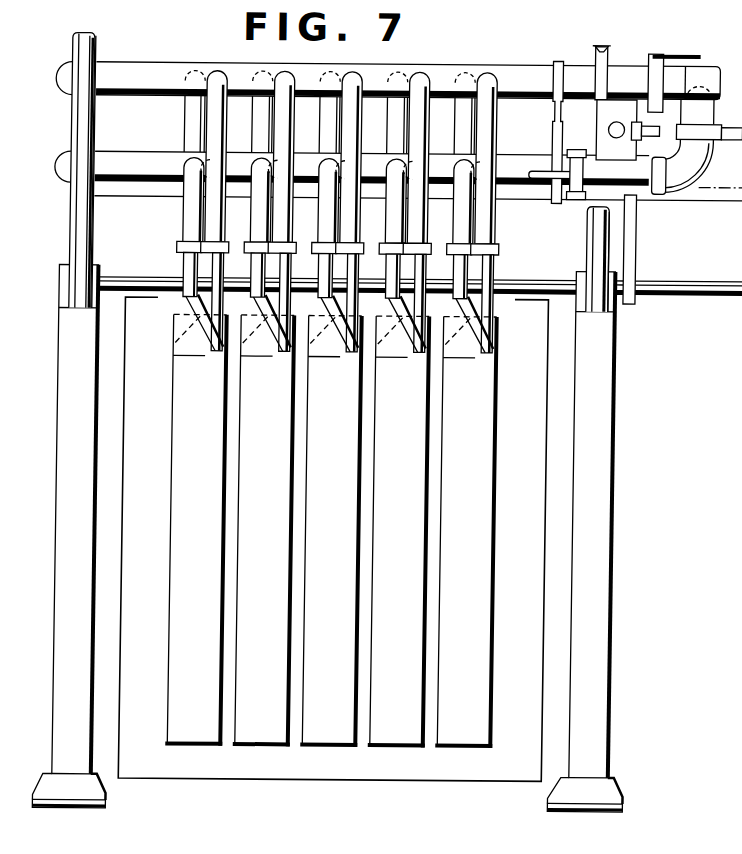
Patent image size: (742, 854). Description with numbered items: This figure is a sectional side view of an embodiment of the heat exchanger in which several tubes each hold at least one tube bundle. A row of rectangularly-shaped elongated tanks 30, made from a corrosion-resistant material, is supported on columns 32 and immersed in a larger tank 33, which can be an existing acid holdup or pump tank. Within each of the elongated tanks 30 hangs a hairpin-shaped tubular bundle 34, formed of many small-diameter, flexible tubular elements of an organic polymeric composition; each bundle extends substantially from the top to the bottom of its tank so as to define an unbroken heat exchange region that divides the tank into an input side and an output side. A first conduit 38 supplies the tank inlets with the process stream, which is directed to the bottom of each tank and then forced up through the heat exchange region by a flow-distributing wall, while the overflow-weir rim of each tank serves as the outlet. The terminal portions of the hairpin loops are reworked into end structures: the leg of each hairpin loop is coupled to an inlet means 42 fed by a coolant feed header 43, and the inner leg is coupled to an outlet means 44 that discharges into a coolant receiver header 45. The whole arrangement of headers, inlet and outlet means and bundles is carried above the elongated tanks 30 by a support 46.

The elongated tanks 30 is at (358, 756).
The columns 32 is at (64, 676).
The larger tank 33 is at (192, 780).
The hairpin-shaped tubular bundles 34 is at (327, 347).
The first conduit 38 is at (547, 241).
The inlet means 42 is at (222, 269).
The coolant feed header 43 is at (388, 80).
The outlet means 44 is at (177, 273).
The coolant receiver header 45 is at (398, 176).
The support 46 is at (73, 115).